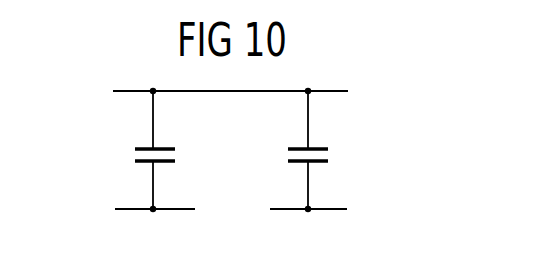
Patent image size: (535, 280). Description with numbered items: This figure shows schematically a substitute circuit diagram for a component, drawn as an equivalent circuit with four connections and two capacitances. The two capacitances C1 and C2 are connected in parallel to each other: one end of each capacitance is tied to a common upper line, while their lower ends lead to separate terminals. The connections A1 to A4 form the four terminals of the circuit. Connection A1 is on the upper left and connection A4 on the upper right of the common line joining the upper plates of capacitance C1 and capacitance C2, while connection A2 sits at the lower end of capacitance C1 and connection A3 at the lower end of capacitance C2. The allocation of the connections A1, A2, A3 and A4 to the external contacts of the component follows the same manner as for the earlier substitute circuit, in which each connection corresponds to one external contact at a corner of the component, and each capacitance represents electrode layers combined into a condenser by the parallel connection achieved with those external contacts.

The connection A1 is at (111, 91).
The connection A2 is at (132, 209).
The connection A3 is at (327, 209).
The connection A4 is at (346, 91).
The capacitance C1 is at (141, 147).
The capacitance C2 is at (294, 147).